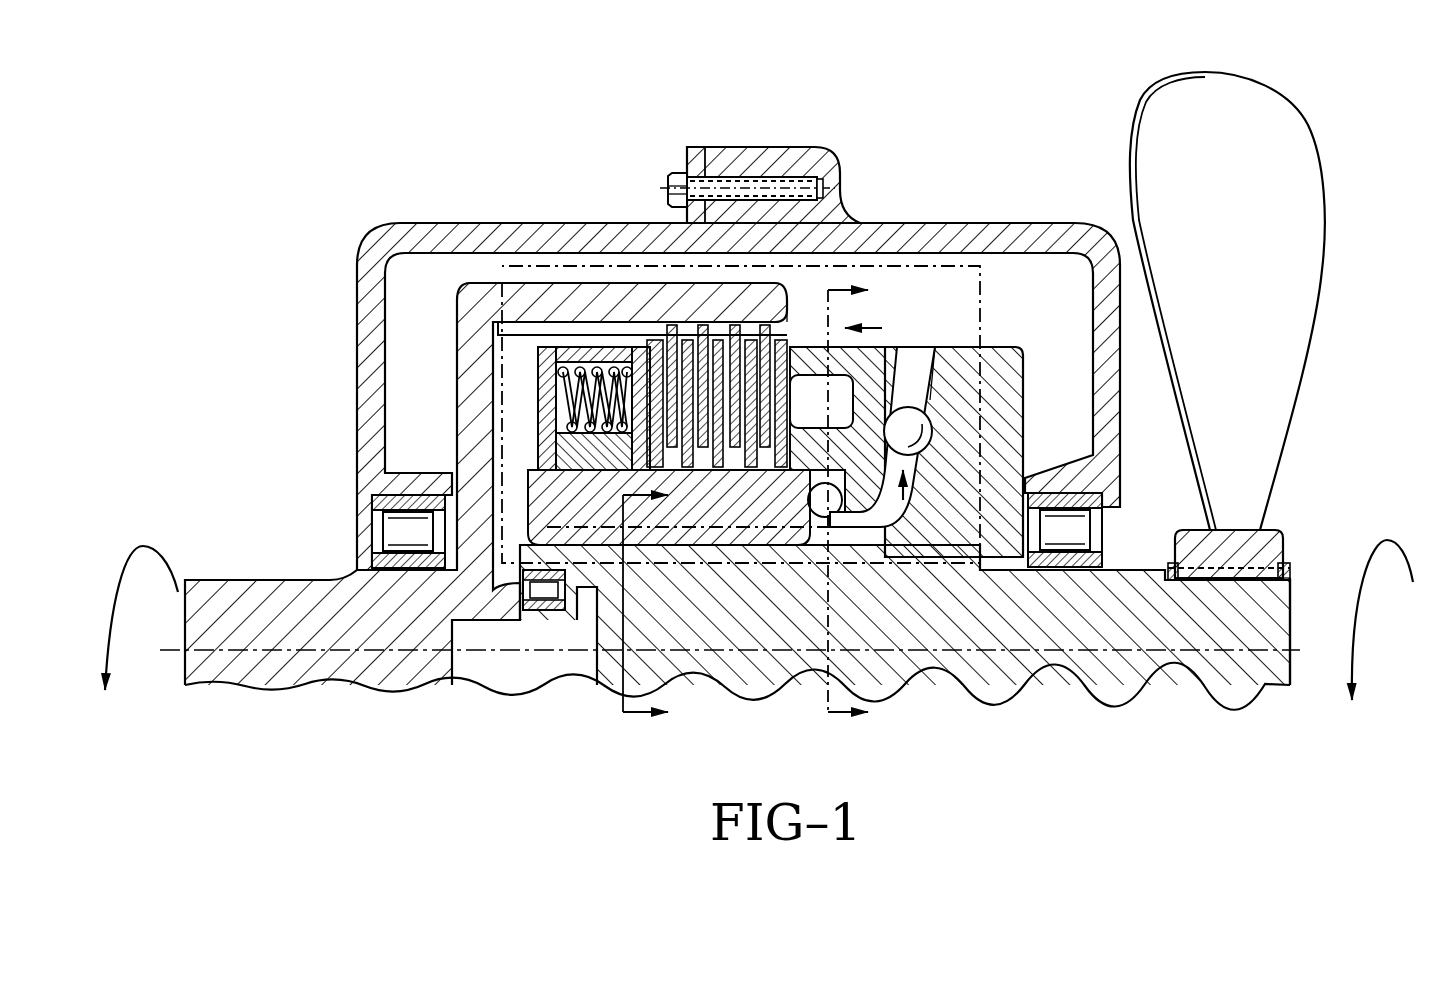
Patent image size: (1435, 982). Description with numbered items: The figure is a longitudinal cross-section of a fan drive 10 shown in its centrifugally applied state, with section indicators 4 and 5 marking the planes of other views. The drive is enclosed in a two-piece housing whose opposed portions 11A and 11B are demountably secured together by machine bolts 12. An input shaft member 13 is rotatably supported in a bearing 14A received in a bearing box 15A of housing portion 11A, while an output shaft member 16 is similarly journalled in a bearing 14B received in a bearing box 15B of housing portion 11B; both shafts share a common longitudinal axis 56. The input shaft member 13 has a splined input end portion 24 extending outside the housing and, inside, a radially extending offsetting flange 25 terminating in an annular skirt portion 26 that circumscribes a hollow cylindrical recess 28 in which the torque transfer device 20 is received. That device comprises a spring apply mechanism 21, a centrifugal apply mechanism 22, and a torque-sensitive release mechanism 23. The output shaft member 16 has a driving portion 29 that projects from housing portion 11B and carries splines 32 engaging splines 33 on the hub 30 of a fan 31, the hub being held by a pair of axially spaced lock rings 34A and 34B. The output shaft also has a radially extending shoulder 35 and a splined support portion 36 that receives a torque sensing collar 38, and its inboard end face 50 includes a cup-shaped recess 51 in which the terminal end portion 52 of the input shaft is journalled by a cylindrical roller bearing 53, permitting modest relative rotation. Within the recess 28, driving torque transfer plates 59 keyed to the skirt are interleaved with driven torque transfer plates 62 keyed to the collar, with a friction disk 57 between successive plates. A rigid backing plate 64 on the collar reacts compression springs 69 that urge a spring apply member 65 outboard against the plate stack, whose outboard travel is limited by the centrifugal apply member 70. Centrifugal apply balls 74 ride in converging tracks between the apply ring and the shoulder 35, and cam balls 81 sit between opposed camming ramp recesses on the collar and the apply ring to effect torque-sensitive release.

The fan drive 10 is at (222, 460).
The housing portion 11A is at (362, 283).
The housing portion 11B is at (1030, 235).
The machine bolt 12 is at (680, 180).
The input shaft member 13 is at (182, 602).
The bearing 14A is at (375, 543).
The bearing 14B is at (1110, 530).
The bearing box 15A is at (393, 498).
The bearing box 15B is at (1100, 478).
The output shaft member 16 is at (1300, 615).
The torque transfer device 20 is at (760, 310).
The spring apply mechanism 21 is at (585, 340).
The centrifugal apply mechanism 22 is at (915, 325).
The torque-sensitive mechanism 23 is at (836, 527).
The splined input end portion 24 is at (235, 620).
The offsetting flange 25 is at (458, 352).
The annular skirt portion 26 is at (535, 300).
The cylindrical recess 28 is at (530, 413).
The driving portion 29 is at (1283, 650).
The hub 30 is at (1230, 545).
The fan 31 is at (1265, 205).
The splines 32 is at (1290, 578).
The splines 33 is at (1215, 560).
The lock ring 34A is at (1175, 570).
The lock ring 34B is at (1280, 570).
The shoulder 35 is at (1020, 360).
The support portion 36 is at (722, 630).
The torque sensing collar 38 is at (770, 610).
The inboard end face 50 is at (512, 598).
The cup-shaped recess 51 is at (582, 650).
The terminal end portion 52 is at (555, 660).
The cylindrical roller bearing 53 is at (545, 615).
The longitudinal axis 56 is at (165, 660).
The friction disk 57 is at (700, 400).
The driving torque transfer plate 59 is at (740, 430).
The driven torque transfer plate 62 is at (645, 405).
The backing plate 64 is at (548, 432).
The spring apply member 65 is at (583, 352).
The compression spring 69 is at (560, 375).
The centrifugal apply member 70 is at (892, 335).
The centrifugal apply ball 74 is at (906, 432).
The cam ball 81 is at (822, 483).
The section line 4- 4 is at (656, 604).
The section line 5- 5 is at (859, 501).